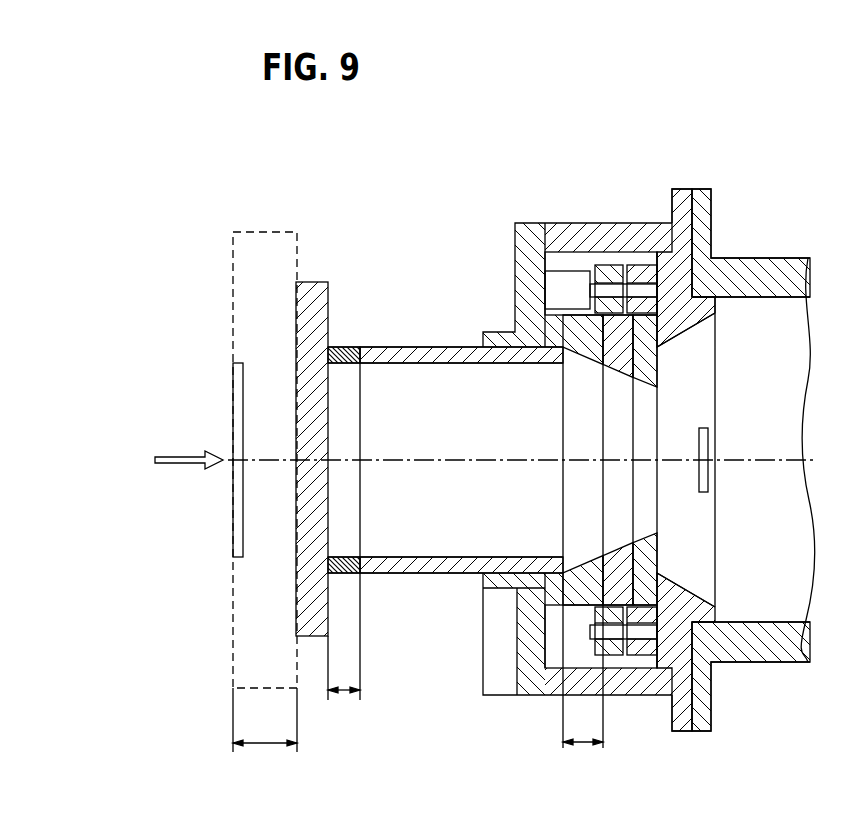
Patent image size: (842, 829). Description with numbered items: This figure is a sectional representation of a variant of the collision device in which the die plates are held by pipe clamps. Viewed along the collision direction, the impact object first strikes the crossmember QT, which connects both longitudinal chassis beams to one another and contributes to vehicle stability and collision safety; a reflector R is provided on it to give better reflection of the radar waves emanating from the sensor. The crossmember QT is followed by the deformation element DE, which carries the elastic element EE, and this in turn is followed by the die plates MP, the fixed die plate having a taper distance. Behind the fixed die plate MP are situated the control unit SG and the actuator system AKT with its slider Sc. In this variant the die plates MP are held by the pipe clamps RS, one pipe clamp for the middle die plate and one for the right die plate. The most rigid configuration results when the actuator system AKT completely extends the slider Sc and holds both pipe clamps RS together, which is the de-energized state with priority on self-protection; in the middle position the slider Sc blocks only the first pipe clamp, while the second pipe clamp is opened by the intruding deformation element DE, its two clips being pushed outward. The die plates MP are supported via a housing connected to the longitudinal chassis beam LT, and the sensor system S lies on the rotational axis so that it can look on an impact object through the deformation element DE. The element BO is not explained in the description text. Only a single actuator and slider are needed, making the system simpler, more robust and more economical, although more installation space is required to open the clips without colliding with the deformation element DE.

The crossmember QT is at (240, 262).
The reflector R is at (239, 403).
The deformation element DE is at (430, 574).
The elastic element EE is at (343, 347).
The control unit SG is at (493, 660).
The actuator system AKT is at (552, 291).
The pipe clamps RS is at (602, 267).
The slider Sc is at (648, 288).
The die plates MP is at (578, 567).
The bore BO is at (712, 586).
The longitudinal chassis beam LT is at (747, 268).
The sensor system S is at (708, 450).